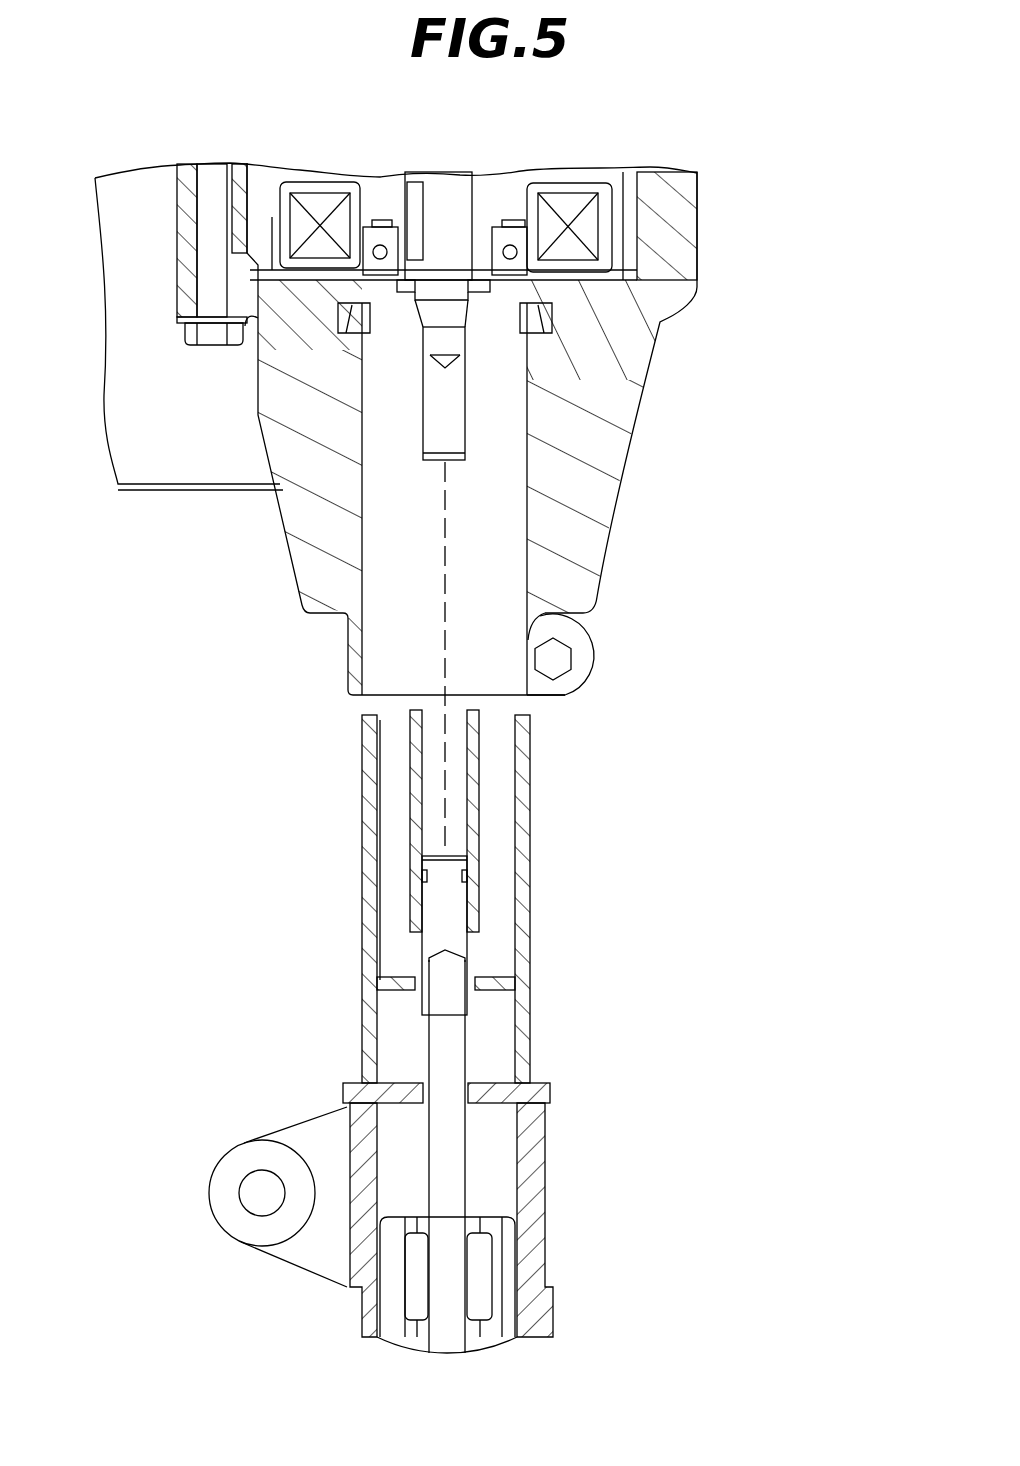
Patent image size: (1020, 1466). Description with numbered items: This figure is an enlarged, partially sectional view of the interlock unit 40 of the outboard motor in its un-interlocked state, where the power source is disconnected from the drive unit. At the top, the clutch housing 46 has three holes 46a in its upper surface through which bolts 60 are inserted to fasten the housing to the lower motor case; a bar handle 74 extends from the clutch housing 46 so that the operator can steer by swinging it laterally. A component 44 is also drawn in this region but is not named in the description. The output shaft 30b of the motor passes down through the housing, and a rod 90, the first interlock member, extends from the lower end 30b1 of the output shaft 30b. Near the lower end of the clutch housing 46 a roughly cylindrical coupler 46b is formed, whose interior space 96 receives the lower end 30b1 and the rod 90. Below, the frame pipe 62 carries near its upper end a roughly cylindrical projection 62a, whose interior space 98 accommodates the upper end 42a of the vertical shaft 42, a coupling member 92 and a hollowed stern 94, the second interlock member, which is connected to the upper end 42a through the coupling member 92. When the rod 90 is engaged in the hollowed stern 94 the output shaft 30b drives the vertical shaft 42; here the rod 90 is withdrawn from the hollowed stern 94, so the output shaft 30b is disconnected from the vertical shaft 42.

The output shaft 30b is at (445, 180).
The lower end of the output shaft 30b1 is at (440, 338).
The interlock unit 40 is at (395, 741).
The vertical shaft 42 is at (444, 1158).
The upper end of the vertical shaft 42a is at (449, 968).
The stator coil 44 is at (620, 197).
The clutch housing 46 is at (702, 257).
The holes 46a is at (176, 210).
The coupler 46b is at (617, 405).
The bolts 60 is at (215, 178).
The frame pipe 62 is at (551, 1227).
The projection 62a is at (366, 790).
The bar handle 74 is at (181, 466).
The rod 90 is at (447, 415).
The coupling member 92 is at (447, 892).
The hollowed stern 94 is at (474, 785).
The space 96 is at (496, 527).
The space 98 is at (395, 776).